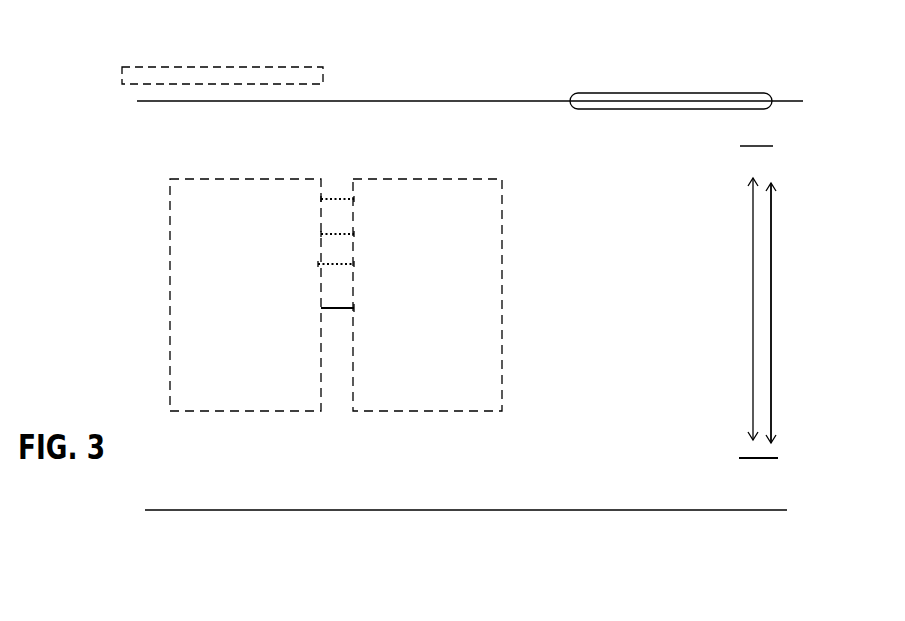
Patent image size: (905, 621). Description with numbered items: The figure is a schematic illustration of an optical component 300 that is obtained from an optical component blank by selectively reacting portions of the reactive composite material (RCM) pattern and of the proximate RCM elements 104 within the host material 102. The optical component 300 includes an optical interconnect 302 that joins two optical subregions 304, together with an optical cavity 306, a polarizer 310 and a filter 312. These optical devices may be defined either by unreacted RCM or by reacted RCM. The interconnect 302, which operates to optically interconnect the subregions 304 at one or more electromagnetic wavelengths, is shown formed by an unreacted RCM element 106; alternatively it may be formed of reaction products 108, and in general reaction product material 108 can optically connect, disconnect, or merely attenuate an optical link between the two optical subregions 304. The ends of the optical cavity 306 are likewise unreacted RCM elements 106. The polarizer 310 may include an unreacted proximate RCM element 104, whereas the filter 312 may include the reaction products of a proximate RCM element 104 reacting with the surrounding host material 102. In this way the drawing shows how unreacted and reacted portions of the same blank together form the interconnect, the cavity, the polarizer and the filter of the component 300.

The optical component 300 is at (140, 46).
The proximate RCM element 104 is at (125, 85).
The unreacted RCM element 106 is at (773, 146).
The reaction product material 108 is at (339, 200).
The host material 102 is at (698, 218).
The optical interconnect 302 is at (321, 308).
The optical subregion 304 is at (487, 333).
The optical cavity 306 is at (787, 354).
The polarizer 310 is at (282, 43).
The filter 312 is at (722, 68).